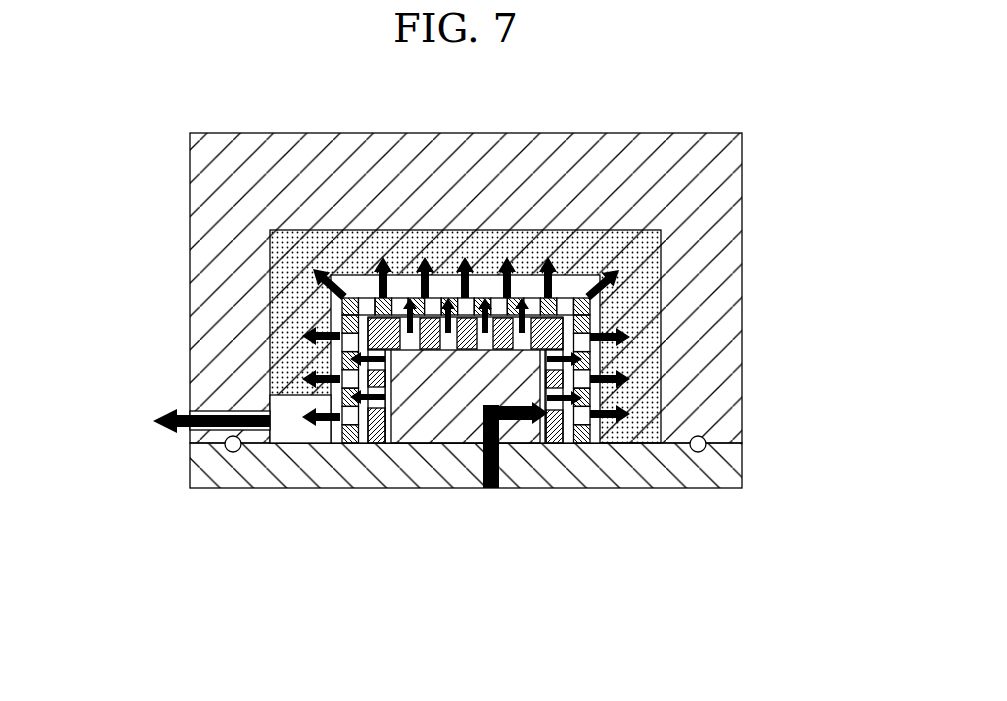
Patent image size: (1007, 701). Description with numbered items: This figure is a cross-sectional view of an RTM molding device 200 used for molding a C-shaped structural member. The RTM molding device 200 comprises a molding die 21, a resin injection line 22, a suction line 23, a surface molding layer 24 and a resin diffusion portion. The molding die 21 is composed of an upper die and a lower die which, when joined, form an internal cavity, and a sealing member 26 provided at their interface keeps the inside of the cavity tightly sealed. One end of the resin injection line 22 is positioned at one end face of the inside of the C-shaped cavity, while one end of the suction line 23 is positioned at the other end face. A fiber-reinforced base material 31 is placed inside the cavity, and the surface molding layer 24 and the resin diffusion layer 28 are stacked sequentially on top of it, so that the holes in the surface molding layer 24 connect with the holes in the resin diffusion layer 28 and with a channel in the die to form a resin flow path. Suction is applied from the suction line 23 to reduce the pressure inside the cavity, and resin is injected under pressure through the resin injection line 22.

The RTM molding device 200 is at (168, 95).
The molding die 21 is at (722, 364).
The resin injection line 22 is at (497, 468).
The suction line 23 is at (186, 412).
The surface molding layer 24 is at (347, 443).
The sealing member 26 is at (233, 452).
The resin diffusion layer 28 is at (377, 443).
The fiber-reinforced base material 31 is at (290, 257).